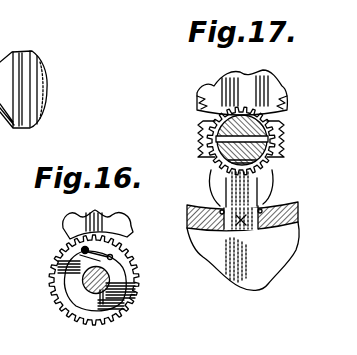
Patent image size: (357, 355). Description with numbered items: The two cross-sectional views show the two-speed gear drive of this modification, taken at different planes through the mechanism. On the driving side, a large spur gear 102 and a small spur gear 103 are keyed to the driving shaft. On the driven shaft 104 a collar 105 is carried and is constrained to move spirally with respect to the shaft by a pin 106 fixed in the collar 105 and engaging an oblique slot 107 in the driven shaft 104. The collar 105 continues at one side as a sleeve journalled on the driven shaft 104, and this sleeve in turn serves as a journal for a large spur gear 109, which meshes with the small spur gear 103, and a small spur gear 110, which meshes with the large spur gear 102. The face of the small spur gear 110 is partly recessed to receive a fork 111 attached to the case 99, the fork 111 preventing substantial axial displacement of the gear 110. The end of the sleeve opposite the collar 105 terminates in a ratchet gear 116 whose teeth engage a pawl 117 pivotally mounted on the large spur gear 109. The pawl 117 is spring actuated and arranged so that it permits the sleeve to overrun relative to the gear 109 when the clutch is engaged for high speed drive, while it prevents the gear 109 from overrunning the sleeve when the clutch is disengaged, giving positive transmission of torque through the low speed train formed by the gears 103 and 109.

In FIG. 17, the case 99 is at (285, 235).
In FIG. 17, the large spur gear 102 is at (200, 86).
In FIG. 16, the small spur gear 103 is at (127, 230).
In FIG. 16, the driven shaft 104 is at (90, 292).
In FIG. 17, the driven shaft 104 is at (267, 152).
In FIG. 17, the collar 105 is at (268, 128).
In FIG. 17, the pin 106 is at (218, 147).
In FIG. 17, the oblique slot 107 is at (220, 162).
In FIG. 16, the large spur gear 109 is at (115, 313).
In FIG. 17, the large spur gear 109 is at (277, 115).
In FIG. 17, the small spur gear 110 is at (208, 117).
In FIG. 17, the fork 111 is at (258, 190).
In FIG. 16, the ratchet gear 116 is at (137, 282).
In FIG. 16, the pawl 117 is at (77, 261).